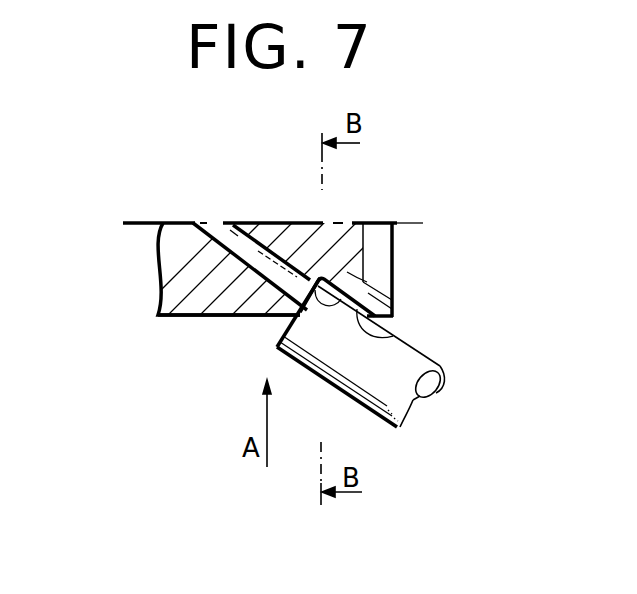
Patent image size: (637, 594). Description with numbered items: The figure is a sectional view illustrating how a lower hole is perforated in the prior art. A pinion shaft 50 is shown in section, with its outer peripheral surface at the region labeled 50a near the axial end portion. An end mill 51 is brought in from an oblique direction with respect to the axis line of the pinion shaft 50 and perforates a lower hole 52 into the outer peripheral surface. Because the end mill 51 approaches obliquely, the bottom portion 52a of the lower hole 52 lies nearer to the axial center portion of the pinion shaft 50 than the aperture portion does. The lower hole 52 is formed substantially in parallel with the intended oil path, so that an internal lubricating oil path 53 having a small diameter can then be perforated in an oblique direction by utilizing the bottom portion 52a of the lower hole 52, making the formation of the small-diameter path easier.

The pinion shaft 50 is at (163, 277).
The bottom surface of block 50a is at (215, 317).
The end mill 51 is at (413, 414).
The lower hole 52 is at (395, 338).
The bottom portion of the lower hole 52a is at (368, 248).
The internal lubricating oil path 53 is at (243, 224).